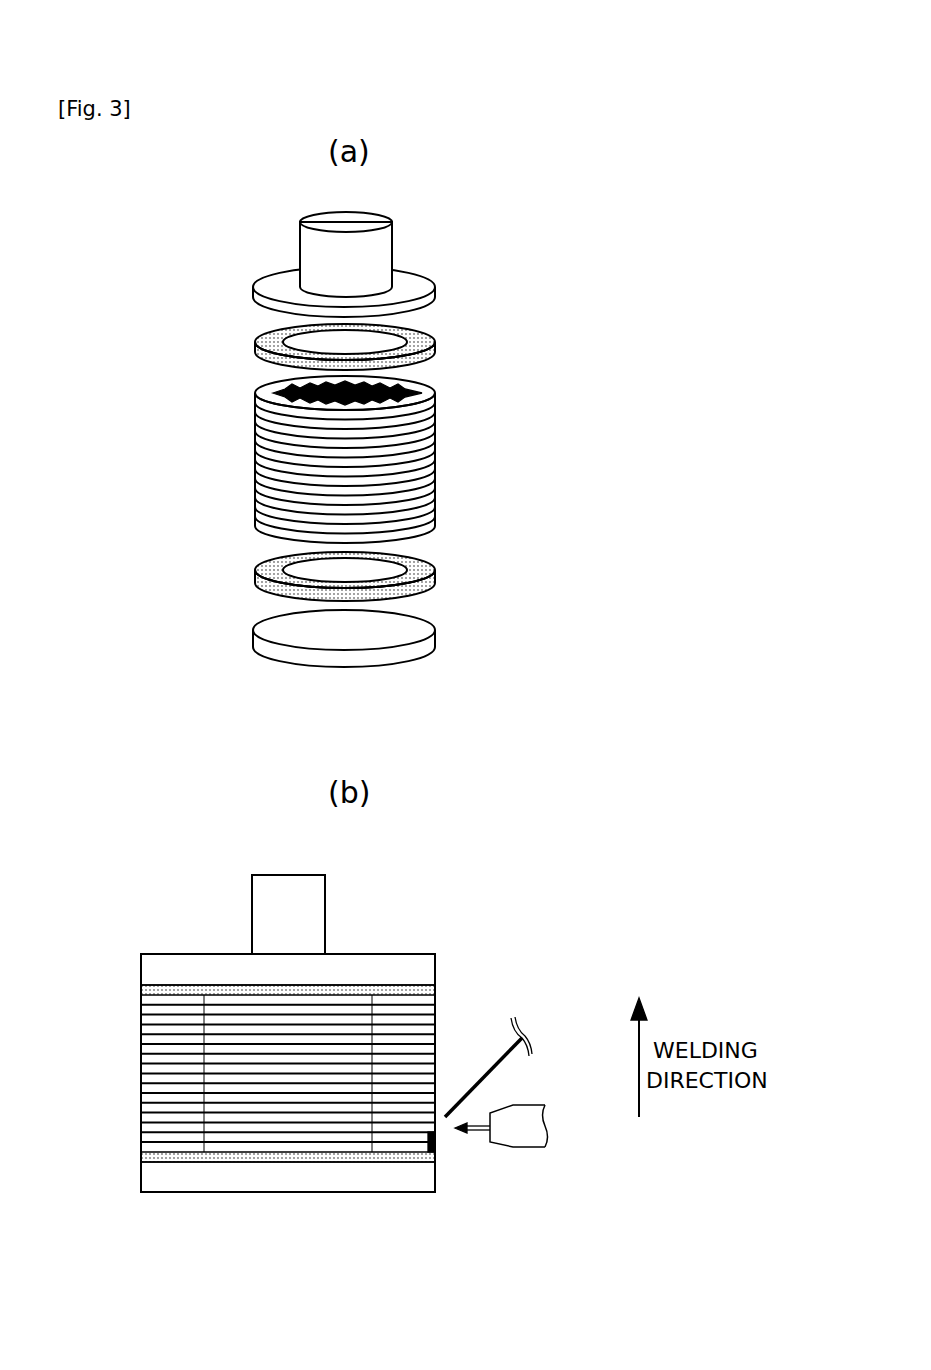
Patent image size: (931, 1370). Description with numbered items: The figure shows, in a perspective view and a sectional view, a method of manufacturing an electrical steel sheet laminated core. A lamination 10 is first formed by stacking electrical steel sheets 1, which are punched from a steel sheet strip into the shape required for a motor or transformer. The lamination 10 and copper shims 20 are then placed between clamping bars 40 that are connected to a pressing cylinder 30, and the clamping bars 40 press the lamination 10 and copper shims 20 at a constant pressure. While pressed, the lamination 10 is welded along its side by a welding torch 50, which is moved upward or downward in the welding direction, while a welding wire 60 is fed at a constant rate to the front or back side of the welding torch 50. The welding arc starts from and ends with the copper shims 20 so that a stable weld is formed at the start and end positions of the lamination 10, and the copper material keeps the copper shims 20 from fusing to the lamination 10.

In FIG. 3A, the electrical steel sheet 1 is at (437, 433).
In FIG. 3B, the electrical steel sheet 1 is at (437, 1025).
In FIG. 3A, the lamination 10 is at (400, 459).
In FIG. 3B, the lamination 10 is at (273, 1072).
In FIG. 3B, the copper shim 20 is at (425, 992).
In FIG. 3A, the pressing cylinder 30 is at (383, 232).
In FIG. 3B, the pressing cylinder 30 is at (316, 918).
In FIG. 3B, the clamping bar 40 is at (425, 965).
In FIG. 3B, the welding torch 50 is at (546, 1127).
In FIG. 3B, the welding wire 60 is at (500, 1063).